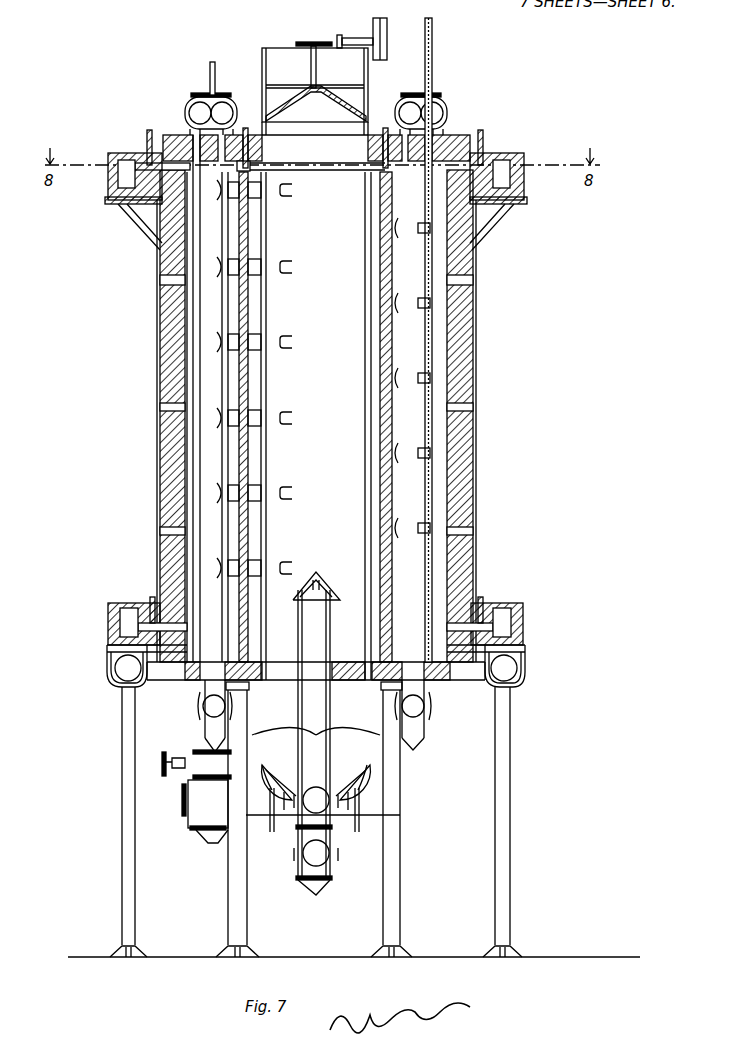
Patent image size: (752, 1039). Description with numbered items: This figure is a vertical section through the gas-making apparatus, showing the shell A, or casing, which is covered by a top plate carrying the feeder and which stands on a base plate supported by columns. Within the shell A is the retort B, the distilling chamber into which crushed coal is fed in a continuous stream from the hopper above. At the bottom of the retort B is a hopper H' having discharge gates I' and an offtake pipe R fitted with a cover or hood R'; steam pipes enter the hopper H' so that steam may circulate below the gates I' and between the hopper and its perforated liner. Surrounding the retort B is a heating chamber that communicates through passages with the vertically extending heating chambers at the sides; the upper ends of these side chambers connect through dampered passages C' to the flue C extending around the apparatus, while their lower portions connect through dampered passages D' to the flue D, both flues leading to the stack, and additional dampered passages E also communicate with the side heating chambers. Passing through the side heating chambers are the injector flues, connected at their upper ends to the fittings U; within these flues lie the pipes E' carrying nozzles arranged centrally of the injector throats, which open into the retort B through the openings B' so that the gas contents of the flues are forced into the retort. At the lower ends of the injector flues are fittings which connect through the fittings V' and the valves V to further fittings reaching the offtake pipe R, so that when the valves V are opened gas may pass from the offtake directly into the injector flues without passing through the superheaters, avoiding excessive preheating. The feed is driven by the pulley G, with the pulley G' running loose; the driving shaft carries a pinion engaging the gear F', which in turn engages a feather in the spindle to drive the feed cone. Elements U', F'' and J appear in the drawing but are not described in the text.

The shell A is at (172, 358).
The retort B is at (349, 426).
The opening B' is at (309, 379).
The flue C is at (307, 162).
The passage C' is at (312, 147).
The flue D is at (301, 627).
The passage D' is at (293, 609).
The passage E is at (304, 401).
The pipe E' is at (468, 340).
The gear F' is at (315, 76).
The funnel F'' is at (316, 104).
The pulley G is at (382, 30).
The pulley G' is at (397, 35).
The hopper H' is at (346, 744).
The discharge gate I' is at (315, 763).
The bracket J is at (122, 212).
The pipe P is at (118, 670).
The offtake pipe R is at (316, 735).
The cover R' is at (316, 573).
The fitting U is at (308, 97).
The valve ball U' is at (316, 81).
The valve V is at (165, 771).
The fitting V' is at (284, 709).
The outlet W is at (318, 884).